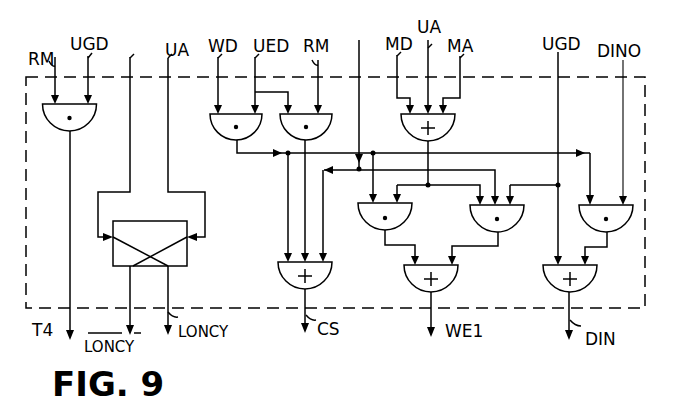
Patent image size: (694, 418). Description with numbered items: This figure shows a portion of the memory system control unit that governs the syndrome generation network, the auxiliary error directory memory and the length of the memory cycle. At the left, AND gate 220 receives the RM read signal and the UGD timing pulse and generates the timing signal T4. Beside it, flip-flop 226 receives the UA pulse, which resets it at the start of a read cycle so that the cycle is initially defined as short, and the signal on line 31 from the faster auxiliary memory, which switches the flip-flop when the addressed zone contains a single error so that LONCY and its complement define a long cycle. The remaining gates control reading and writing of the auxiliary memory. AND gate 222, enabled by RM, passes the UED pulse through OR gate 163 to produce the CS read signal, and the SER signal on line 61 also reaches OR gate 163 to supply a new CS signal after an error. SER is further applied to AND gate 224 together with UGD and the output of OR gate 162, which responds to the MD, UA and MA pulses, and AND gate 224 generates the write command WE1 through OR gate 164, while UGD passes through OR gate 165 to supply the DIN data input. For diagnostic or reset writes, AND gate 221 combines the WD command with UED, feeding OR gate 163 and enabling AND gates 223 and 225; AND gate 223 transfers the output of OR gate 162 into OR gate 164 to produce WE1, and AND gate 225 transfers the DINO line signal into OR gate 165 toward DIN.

The line 31 is at (124, 141).
The line 61 is at (359, 73).
The OR gate 162 is at (455, 122).
The OR gate 163 is at (327, 279).
The OR gate 164 is at (455, 280).
The OR gate 165 is at (588, 283).
The AND gate 220 is at (90, 124).
The AND gate 221 is at (395, 139).
The AND gate 222 is at (332, 120).
The AND gate 223 is at (366, 228).
The AND gate 224 is at (510, 229).
The AND gate 225 is at (620, 230).
The flip-flop 226 is at (188, 251).